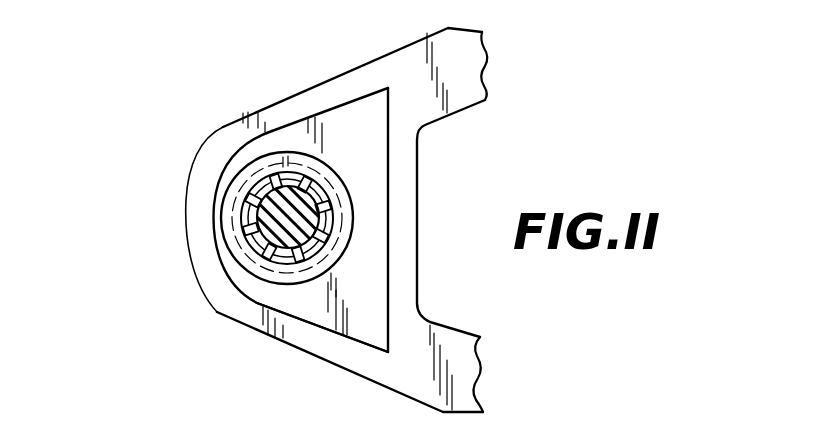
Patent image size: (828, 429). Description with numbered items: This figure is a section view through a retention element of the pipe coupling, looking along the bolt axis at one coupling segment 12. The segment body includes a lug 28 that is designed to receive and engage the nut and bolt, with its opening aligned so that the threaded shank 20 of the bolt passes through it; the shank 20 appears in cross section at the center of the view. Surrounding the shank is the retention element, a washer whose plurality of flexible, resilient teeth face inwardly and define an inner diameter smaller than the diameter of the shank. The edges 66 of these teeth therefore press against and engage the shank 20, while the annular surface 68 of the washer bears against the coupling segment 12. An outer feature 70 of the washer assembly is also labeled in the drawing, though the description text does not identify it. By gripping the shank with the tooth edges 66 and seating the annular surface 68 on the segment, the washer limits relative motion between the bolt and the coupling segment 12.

The coupling segment 12 is at (467, 40).
The threaded shank 20 is at (278, 247).
The lug 28 is at (316, 348).
The edges of teeth 66 is at (268, 242).
The annular surface 68 is at (245, 222).
The outer bearing housing 70 is at (285, 185).